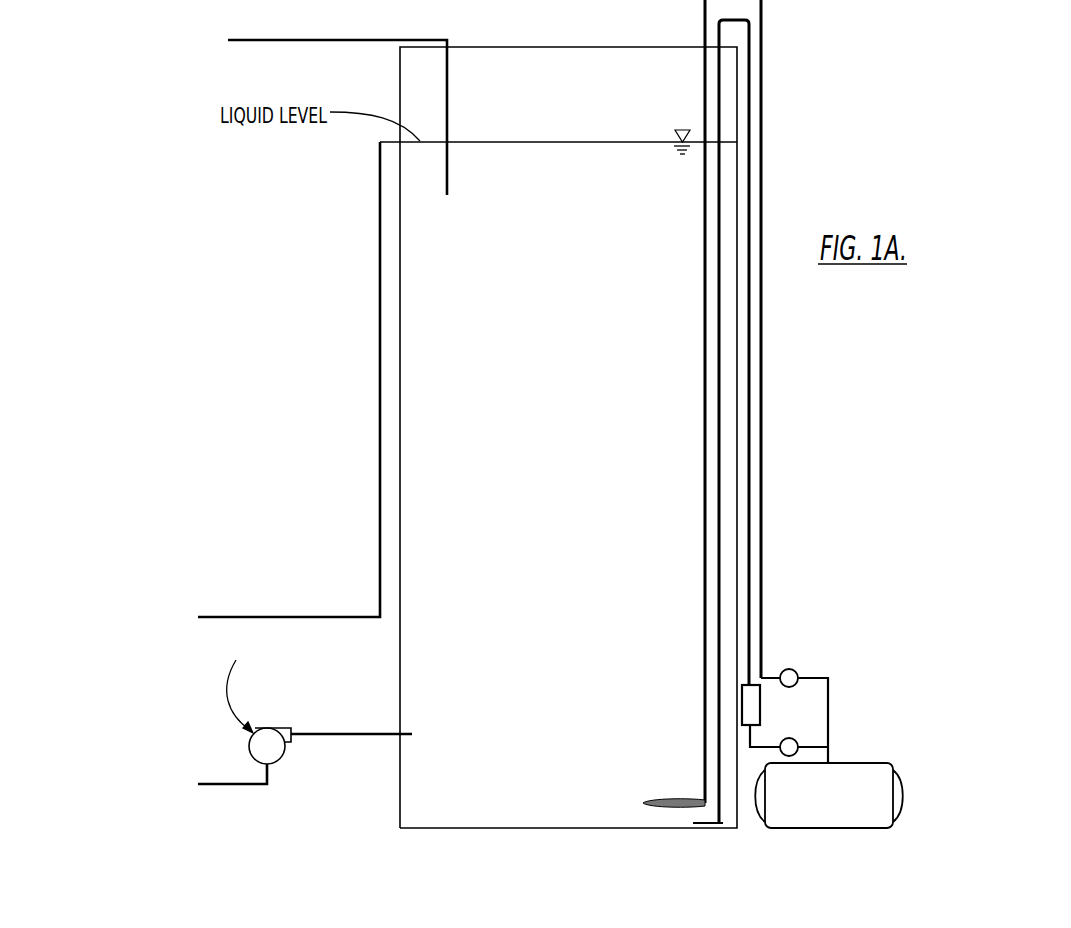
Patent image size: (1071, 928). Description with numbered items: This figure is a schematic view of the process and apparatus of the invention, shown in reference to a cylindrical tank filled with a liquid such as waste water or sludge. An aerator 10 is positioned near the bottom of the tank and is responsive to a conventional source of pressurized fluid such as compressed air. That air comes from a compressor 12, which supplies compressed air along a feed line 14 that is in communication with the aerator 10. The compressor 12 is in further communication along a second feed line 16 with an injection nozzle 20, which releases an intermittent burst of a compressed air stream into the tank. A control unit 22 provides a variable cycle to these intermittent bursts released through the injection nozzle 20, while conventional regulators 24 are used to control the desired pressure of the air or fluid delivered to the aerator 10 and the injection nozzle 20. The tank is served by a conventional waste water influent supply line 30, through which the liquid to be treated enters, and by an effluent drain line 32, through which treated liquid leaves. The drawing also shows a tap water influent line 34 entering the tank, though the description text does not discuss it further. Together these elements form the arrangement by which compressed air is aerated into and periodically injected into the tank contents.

The aerator 10 is at (687, 790).
The compressor 12 is at (891, 763).
The feed line 14 is at (704, 418).
The feed line 16 is at (720, 378).
The injection nozzle 20 is at (721, 838).
The control unit 22 is at (752, 676).
The regulators 24 is at (791, 660).
The waste water influent supply line 30 is at (360, 736).
The effluent drain line 32 is at (209, 617).
The tap water influent 34 is at (356, 40).